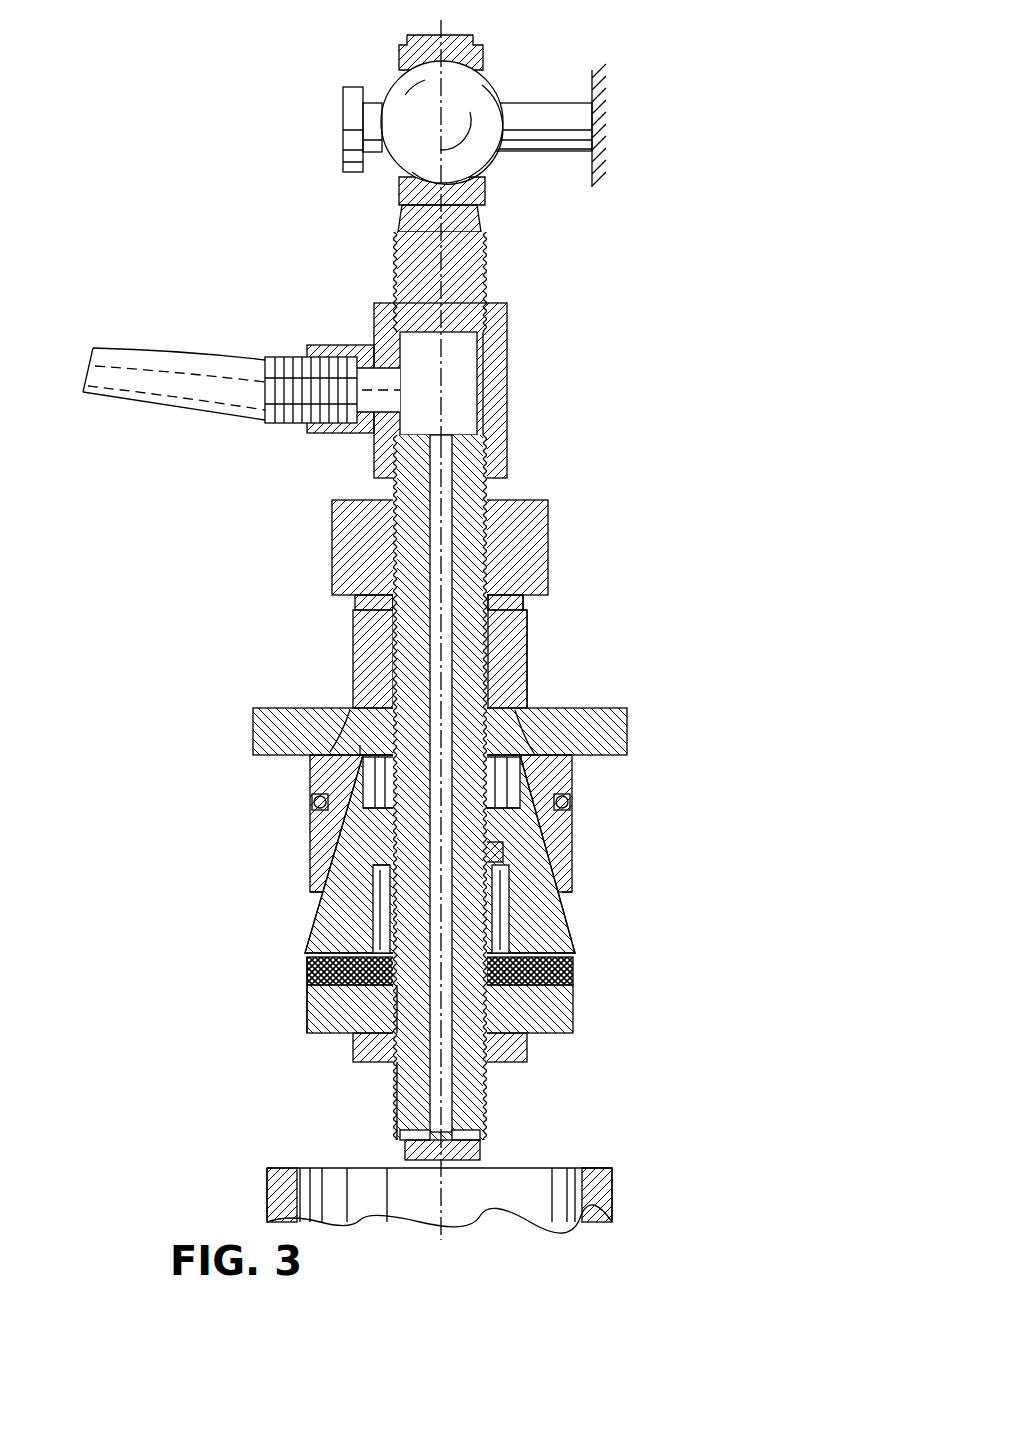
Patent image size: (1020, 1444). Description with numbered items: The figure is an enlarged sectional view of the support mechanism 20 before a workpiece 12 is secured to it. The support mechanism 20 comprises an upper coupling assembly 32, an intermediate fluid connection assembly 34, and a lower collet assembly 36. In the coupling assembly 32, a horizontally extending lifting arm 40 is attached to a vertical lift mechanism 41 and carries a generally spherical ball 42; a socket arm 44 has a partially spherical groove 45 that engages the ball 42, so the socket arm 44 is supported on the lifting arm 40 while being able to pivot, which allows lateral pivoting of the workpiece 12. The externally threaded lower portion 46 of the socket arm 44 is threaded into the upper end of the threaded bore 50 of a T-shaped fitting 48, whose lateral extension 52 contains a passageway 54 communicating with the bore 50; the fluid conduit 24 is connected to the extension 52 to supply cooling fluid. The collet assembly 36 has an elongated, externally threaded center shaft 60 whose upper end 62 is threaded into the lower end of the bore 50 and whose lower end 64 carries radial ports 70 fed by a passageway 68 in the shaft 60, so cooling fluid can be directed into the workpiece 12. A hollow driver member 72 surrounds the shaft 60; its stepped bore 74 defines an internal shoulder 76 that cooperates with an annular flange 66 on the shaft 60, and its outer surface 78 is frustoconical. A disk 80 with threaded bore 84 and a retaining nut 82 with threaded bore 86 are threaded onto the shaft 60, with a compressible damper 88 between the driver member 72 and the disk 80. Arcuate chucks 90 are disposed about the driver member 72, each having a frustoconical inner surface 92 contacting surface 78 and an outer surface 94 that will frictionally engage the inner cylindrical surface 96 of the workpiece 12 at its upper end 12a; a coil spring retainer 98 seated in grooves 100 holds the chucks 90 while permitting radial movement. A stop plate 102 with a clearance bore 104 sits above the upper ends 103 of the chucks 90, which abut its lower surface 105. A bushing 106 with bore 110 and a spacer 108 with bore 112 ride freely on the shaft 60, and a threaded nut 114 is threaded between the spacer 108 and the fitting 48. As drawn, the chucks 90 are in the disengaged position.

The workpiece 12 is at (612, 1195).
The upper end of the workpiece 12a is at (605, 1168).
The support mechanism 20 is at (677, 177).
The fluid conduit 24 is at (186, 410).
The coupling assembly 32 is at (290, 168).
The fluid connection assembly 34 is at (278, 313).
The collet assembly 36 is at (680, 837).
The lifting arm 40 is at (547, 145).
The vertical lift mechanism 41 is at (592, 78).
The ball 42 is at (487, 100).
The socket arm 44 is at (480, 218).
The partially spherical groove 45 is at (407, 172).
The lower portion of the socket arm 46 is at (485, 266).
The T-shaped fitting 48 is at (505, 346).
The threaded bore 50 is at (485, 400).
The lateral extension 52 is at (345, 437).
The passageway 54 is at (360, 368).
The center shaft 60 is at (470, 625).
The upper end of the shaft 62 is at (484, 448).
The lower end of the shaft 64 is at (480, 1156).
The annular flange 66 is at (503, 850).
The passageway 68 is at (447, 540).
The ports 70 is at (490, 1135).
The driver member 72 is at (325, 955).
The stepped bore 74 is at (502, 935).
The internal shoulder 76 is at (380, 870).
The frustoconical outer surface 78 is at (565, 916).
The disk 80 is at (565, 1012).
The retaining nut 82 is at (515, 1050).
The threaded bore of the disk 84 is at (408, 1020).
The threaded bore of the retaining nut 86 is at (403, 1070).
The damper 88 is at (575, 975).
The chucks 90 is at (562, 832).
The frustoconical inner surface 92 is at (345, 880).
The outer surface of the chuck 94 is at (575, 772).
The inner cylindrical surface of the workpiece 96 is at (300, 1185).
The coil spring retainer 98 is at (572, 802).
The grooves 100 is at (312, 802).
The stop plate 102 is at (612, 745).
The upper ends of the chucks 103 is at (540, 755).
The cylindrical bore 104 is at (470, 745).
The lower surface of the stop plate 105 is at (360, 740).
The bushing 106 is at (522, 648).
The spacer 108 is at (525, 605).
The bore of the bushing 110 is at (388, 650).
The bore of the spacer 112 is at (400, 592).
The threaded nut 114 is at (540, 515).